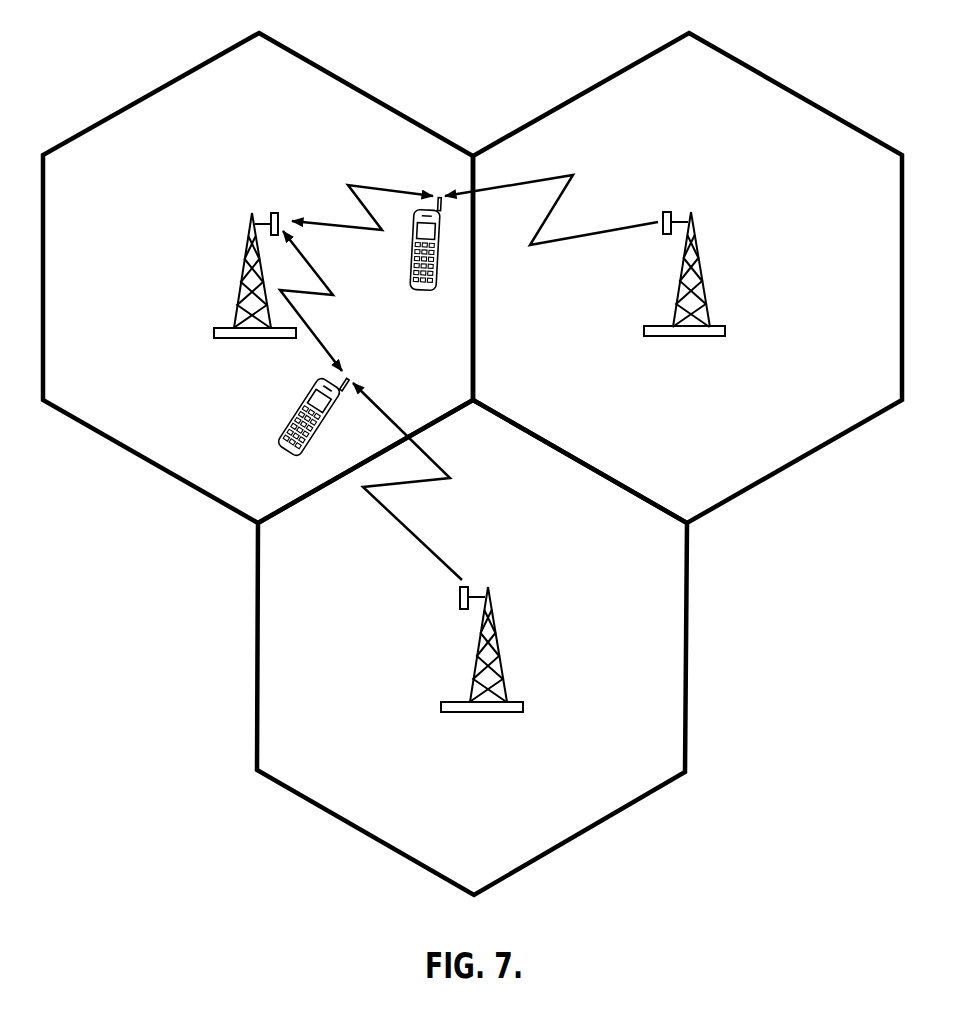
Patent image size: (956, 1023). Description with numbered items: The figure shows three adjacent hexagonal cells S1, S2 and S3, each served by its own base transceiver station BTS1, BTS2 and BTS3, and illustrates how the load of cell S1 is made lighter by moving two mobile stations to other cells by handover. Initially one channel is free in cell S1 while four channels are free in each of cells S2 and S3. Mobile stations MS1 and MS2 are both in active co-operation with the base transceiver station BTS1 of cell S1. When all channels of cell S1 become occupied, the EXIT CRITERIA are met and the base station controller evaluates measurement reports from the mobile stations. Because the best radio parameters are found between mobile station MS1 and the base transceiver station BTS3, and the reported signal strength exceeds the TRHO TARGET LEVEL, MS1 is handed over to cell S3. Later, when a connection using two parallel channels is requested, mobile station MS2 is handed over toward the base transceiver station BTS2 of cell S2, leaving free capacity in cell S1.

The cell S1 is at (258, 278).
The cell S2 is at (687, 278).
The cell S3 is at (472, 647).
The base transceiver station BTS1 is at (252, 292).
The base transceiver station BTS2 is at (684, 290).
The base transceiver station BTS3 is at (482, 667).
The mobile station MS1 is at (302, 426).
The mobile station MS2 is at (423, 268).